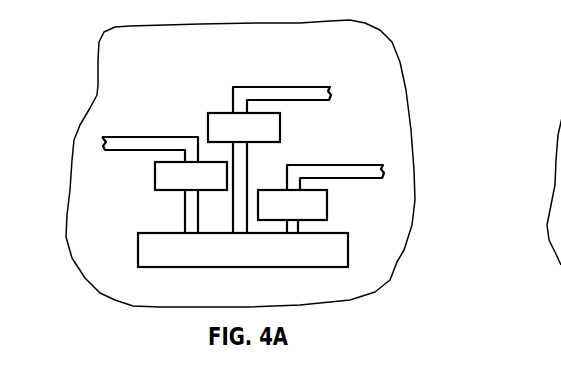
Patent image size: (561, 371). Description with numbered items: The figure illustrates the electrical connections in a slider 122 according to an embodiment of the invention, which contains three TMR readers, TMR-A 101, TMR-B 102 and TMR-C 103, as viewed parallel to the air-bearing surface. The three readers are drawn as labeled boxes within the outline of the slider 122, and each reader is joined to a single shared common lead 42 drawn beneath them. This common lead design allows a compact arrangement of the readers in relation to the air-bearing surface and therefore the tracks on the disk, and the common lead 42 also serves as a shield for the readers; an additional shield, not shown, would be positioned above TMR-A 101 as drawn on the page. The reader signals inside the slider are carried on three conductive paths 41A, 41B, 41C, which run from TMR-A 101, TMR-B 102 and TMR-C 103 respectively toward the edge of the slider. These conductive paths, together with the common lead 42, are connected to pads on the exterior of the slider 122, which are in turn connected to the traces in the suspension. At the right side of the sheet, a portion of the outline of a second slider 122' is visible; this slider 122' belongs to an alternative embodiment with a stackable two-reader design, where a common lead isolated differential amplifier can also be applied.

The slider 122 is at (215, 163).
The slider 122' is at (524, 150).
The conductive path 41A is at (277, 87).
The conductive path 41B is at (133, 137).
The conductive path 41C is at (338, 165).
The TMR reader 101 is at (282, 135).
The TMR reader 102 is at (155, 177).
The TMR reader 103 is at (328, 207).
The common lead 42 is at (220, 267).